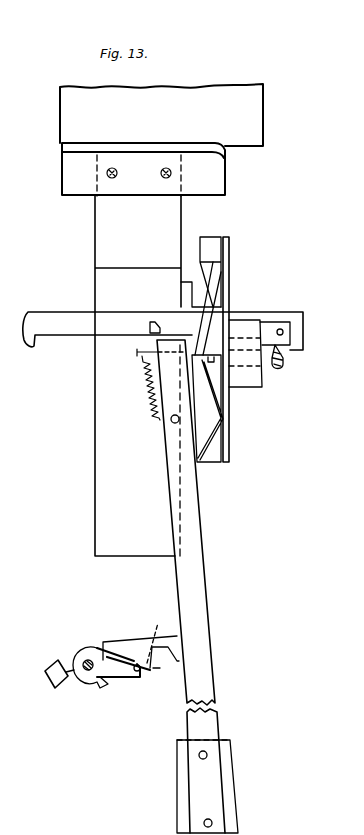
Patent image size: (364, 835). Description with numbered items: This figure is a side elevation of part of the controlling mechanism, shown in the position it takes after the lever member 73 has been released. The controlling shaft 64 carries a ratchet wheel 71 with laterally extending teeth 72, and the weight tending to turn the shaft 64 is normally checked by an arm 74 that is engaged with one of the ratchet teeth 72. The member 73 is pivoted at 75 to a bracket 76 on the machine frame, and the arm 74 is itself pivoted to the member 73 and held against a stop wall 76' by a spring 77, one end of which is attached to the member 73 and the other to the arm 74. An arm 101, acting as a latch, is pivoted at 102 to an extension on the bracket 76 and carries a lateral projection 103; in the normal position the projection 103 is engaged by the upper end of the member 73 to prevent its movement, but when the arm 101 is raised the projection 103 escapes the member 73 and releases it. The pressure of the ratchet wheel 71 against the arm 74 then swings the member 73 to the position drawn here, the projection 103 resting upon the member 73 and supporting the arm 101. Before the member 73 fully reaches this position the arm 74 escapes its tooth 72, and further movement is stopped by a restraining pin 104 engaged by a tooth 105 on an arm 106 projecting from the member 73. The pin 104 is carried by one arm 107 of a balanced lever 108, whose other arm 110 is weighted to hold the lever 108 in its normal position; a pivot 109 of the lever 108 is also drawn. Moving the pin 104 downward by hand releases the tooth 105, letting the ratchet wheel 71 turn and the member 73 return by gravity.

The controlling shaft 64 is at (276, 369).
The ratchet wheel 71 is at (229, 432).
The ratchet tooth 72 is at (210, 243).
The member 73 is at (202, 620).
The arm 74 is at (192, 282).
The pivot 75 is at (172, 423).
The bracket 76 is at (120, 376).
The stop wall 76' is at (147, 271).
The spring 77 is at (143, 403).
The arm 101 is at (55, 322).
The pivot 102 is at (283, 332).
The lateral projection 103 is at (150, 322).
The restraining pin 104 is at (146, 673).
The tooth 105 is at (151, 672).
The arm 106 is at (100, 640).
The arm 107 is at (144, 640).
The balanced lever 108 is at (103, 686).
The pivot 109 is at (84, 661).
The arm 110 is at (52, 689).